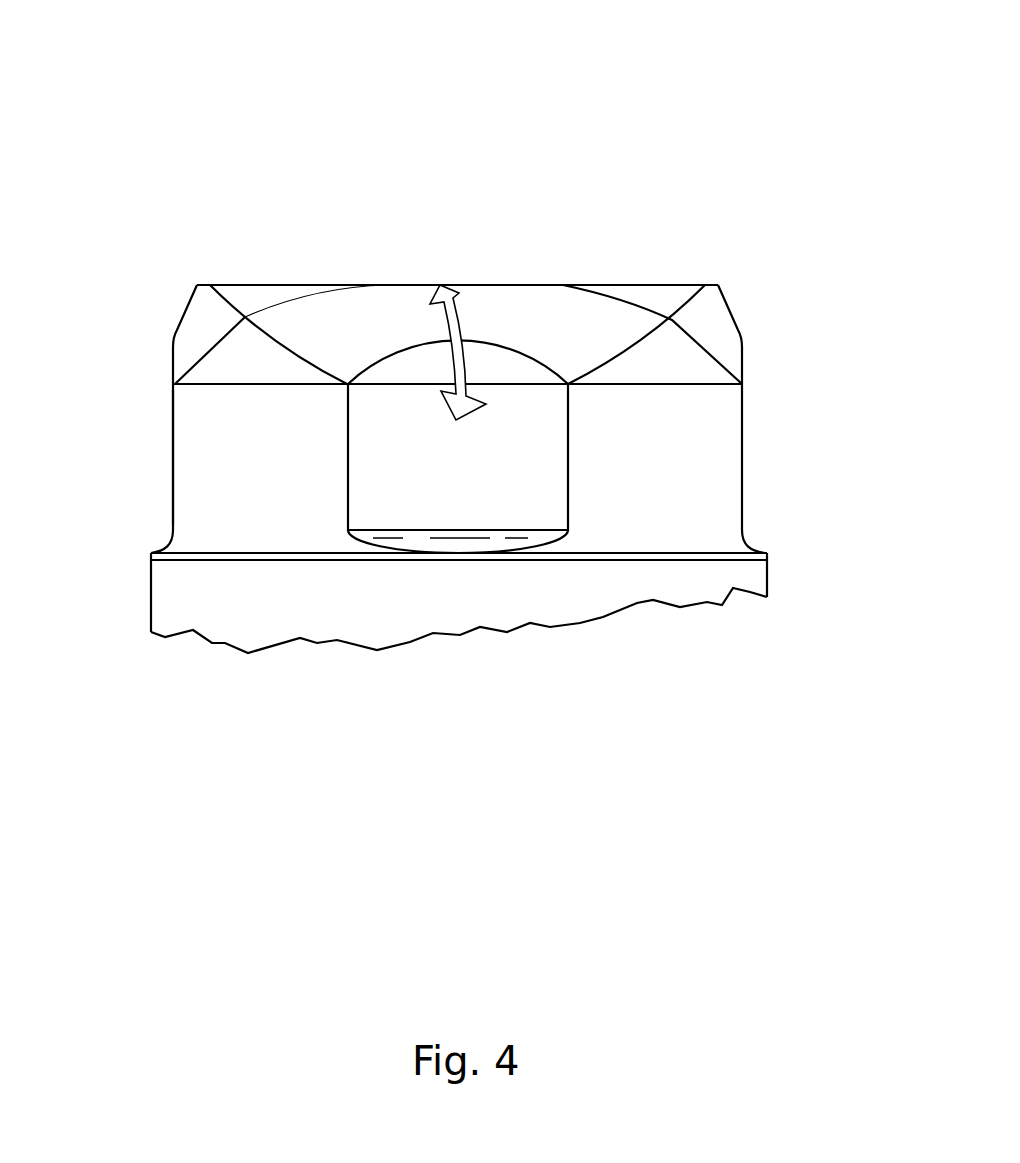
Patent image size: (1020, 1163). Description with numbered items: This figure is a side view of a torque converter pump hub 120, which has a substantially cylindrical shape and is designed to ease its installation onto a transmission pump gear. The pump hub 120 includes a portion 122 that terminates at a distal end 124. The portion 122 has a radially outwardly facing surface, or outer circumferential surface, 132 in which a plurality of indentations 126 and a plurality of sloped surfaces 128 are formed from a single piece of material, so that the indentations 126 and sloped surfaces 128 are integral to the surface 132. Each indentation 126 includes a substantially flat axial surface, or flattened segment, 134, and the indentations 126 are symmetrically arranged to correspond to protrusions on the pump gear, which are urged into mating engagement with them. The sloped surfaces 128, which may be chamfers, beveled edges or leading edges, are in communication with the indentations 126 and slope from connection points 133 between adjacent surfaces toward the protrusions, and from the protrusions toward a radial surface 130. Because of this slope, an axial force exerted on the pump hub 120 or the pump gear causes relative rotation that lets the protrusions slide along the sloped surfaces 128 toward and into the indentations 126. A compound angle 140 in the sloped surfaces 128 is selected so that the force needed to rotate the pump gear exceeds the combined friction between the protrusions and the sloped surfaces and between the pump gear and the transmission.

The pump hub 120 is at (620, 122).
The portion 122 is at (797, 435).
The distal end 124 is at (725, 277).
The plurality of indentations 126 is at (575, 483).
The plurality of sloped surfaces 128 is at (602, 325).
The radial surface 130 is at (210, 284).
The radially outwardly facing surface 132 is at (215, 480).
The connection points 133 is at (245, 317).
The substantially flat axial surface 134 is at (523, 502).
The compound angle 140 is at (443, 327).